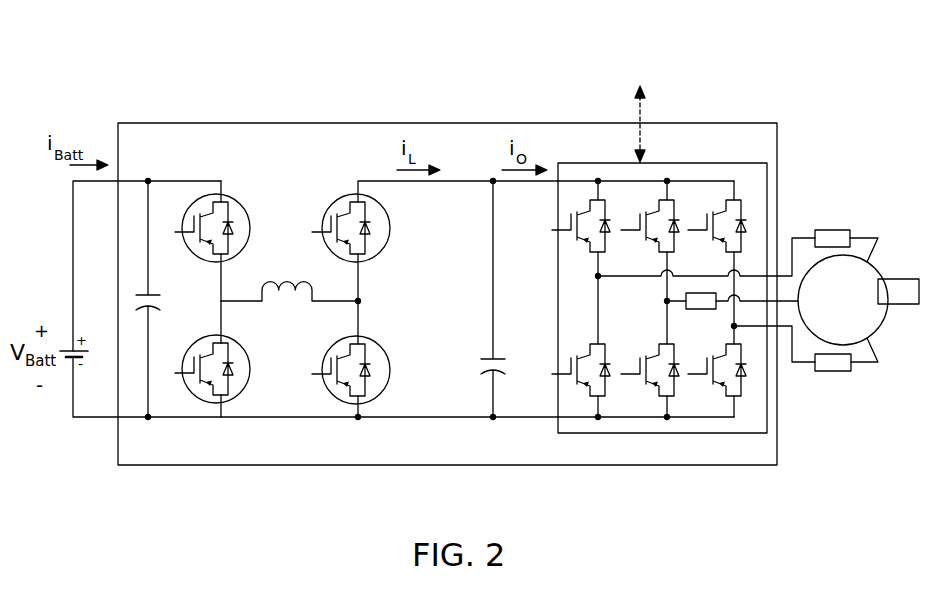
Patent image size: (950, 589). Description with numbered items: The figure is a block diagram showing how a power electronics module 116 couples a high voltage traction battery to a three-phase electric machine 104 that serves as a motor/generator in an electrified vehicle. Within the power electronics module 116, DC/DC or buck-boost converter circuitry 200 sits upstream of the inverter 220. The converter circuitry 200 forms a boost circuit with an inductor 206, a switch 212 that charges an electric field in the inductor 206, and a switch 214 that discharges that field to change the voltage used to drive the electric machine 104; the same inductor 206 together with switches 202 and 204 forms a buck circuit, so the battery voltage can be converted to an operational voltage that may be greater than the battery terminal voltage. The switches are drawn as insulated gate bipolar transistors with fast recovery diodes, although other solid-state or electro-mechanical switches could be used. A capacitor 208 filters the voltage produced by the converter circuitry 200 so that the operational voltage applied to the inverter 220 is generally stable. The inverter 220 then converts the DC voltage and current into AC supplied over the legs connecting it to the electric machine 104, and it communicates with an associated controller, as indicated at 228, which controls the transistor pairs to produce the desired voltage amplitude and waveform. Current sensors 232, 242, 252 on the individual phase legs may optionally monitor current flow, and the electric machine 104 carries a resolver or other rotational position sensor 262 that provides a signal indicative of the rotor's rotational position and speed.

The buck-boost converter circuitry 200 is at (198, 118).
The electric machine 104 is at (68, 345).
The power electronics module 116 is at (591, 122).
The switch 202 is at (391, 372).
The switch 204 is at (391, 226).
The inductor 206 is at (290, 280).
The capacitor 208 is at (488, 356).
The switch 212 is at (241, 207).
The switch 214 is at (246, 378).
The inverter 220 is at (690, 162).
The controller communication 228 is at (642, 82).
The current sensor 232 is at (832, 230).
The current sensor 242 is at (700, 310).
The current sensor 252 is at (832, 373).
The rotational position sensor 262 is at (893, 279).